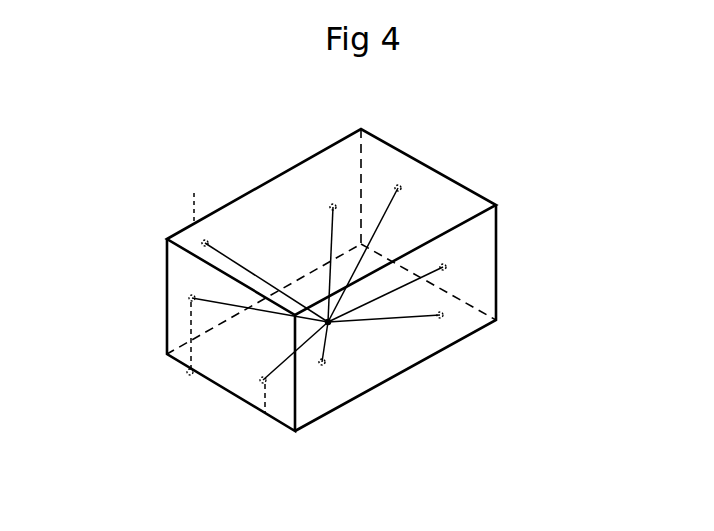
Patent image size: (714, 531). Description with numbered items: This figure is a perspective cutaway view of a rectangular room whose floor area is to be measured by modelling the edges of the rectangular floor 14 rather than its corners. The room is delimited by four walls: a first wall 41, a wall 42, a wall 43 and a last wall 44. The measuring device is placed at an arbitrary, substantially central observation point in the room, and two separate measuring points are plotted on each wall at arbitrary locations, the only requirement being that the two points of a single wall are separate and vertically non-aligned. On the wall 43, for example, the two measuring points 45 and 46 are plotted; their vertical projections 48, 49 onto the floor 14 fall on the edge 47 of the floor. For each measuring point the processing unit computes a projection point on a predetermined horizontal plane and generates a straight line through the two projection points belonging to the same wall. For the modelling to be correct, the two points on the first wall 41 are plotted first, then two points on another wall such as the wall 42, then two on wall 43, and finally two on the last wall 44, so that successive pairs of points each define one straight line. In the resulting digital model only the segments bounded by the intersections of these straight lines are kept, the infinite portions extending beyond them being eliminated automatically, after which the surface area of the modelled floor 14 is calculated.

The floor 14 is at (370, 372).
The first wall 41 is at (432, 221).
The wall 42 is at (445, 327).
The wall 43 is at (233, 363).
The last wall 44 is at (247, 222).
The measuring point 45 is at (189, 296).
The measuring point 46 is at (259, 392).
The edge 47 is at (287, 432).
The vertical projection 48 is at (186, 373).
The vertical projection 49 is at (265, 419).